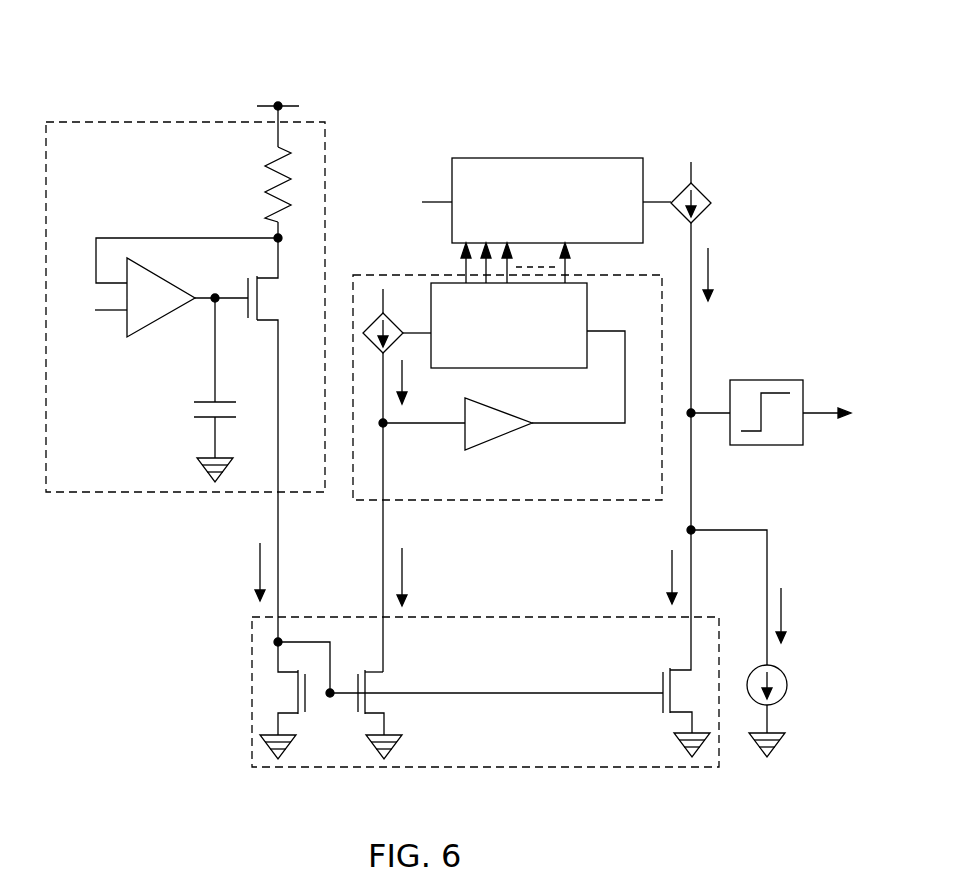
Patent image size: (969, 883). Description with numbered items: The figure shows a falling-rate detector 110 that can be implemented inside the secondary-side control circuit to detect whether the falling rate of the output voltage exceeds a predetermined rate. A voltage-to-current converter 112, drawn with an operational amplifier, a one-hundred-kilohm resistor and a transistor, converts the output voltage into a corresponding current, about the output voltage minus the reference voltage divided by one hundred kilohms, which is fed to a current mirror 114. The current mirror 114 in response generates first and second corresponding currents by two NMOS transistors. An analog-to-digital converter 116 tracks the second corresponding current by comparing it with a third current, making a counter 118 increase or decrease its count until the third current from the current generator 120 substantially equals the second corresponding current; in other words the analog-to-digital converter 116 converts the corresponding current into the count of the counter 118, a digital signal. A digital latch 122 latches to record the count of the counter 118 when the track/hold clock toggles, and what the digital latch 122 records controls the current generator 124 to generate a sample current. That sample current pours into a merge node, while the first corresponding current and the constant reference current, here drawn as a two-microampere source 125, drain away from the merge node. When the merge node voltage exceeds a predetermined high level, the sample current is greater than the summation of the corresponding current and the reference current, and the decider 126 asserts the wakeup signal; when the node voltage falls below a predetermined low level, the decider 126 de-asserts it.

The falling-rate detector 110 is at (380, 92).
The voltage-to-current converter 112 is at (110, 148).
The current mirror 114 is at (509, 646).
The analog-to-digital converter 116 is at (627, 484).
The counter 118 is at (495, 350).
The current generator 120 is at (397, 321).
The digital latch 122 is at (534, 226).
The current generator 124 is at (707, 192).
The reference current source 125 is at (782, 670).
The decider 126 is at (748, 380).